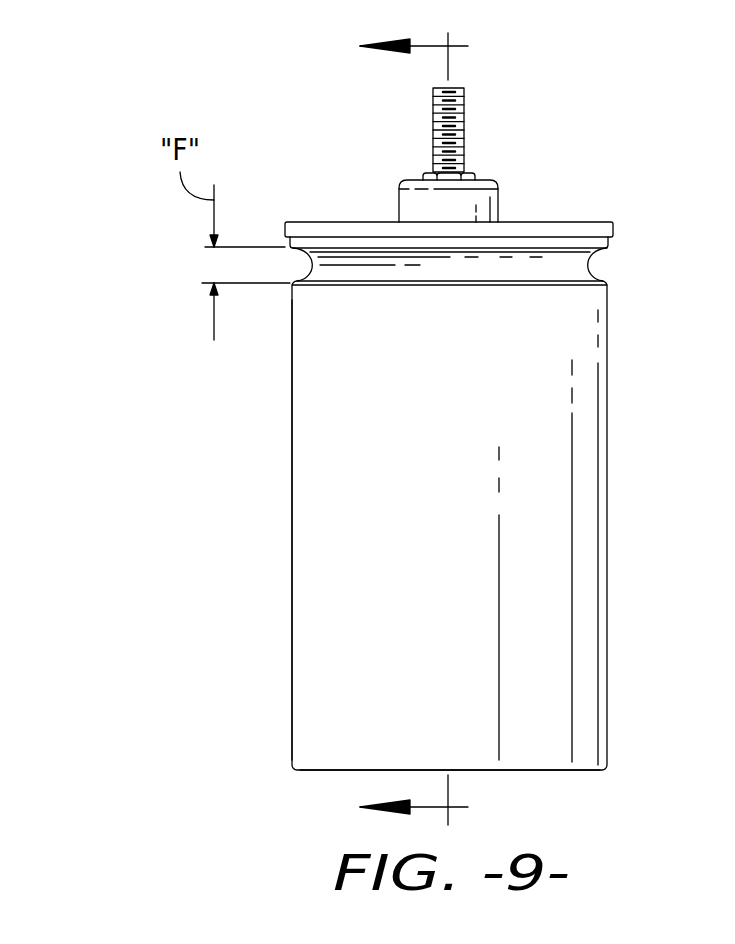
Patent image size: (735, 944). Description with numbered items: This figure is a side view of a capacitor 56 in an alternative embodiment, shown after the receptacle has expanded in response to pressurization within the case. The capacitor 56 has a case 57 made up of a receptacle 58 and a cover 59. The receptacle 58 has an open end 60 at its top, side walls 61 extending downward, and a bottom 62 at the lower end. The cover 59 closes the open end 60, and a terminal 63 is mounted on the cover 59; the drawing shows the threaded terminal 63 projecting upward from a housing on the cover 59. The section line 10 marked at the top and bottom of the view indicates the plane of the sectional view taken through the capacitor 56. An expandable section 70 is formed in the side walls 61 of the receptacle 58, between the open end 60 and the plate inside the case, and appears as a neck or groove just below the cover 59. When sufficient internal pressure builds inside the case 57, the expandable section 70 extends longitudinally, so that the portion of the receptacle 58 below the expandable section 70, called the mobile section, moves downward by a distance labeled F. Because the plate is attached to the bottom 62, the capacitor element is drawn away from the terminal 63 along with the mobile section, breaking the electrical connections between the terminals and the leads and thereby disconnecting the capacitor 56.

The section line 10- 10 is at (390, 430).
The capacitor 56 is at (627, 357).
The case 57 is at (610, 445).
The receptacle 58 is at (607, 603).
The cover 59 is at (318, 222).
The open end 60 is at (540, 222).
The side walls 61 is at (317, 497).
The bottom 62 is at (533, 770).
The terminal 63 is at (425, 172).
The expandable section 70 is at (592, 265).